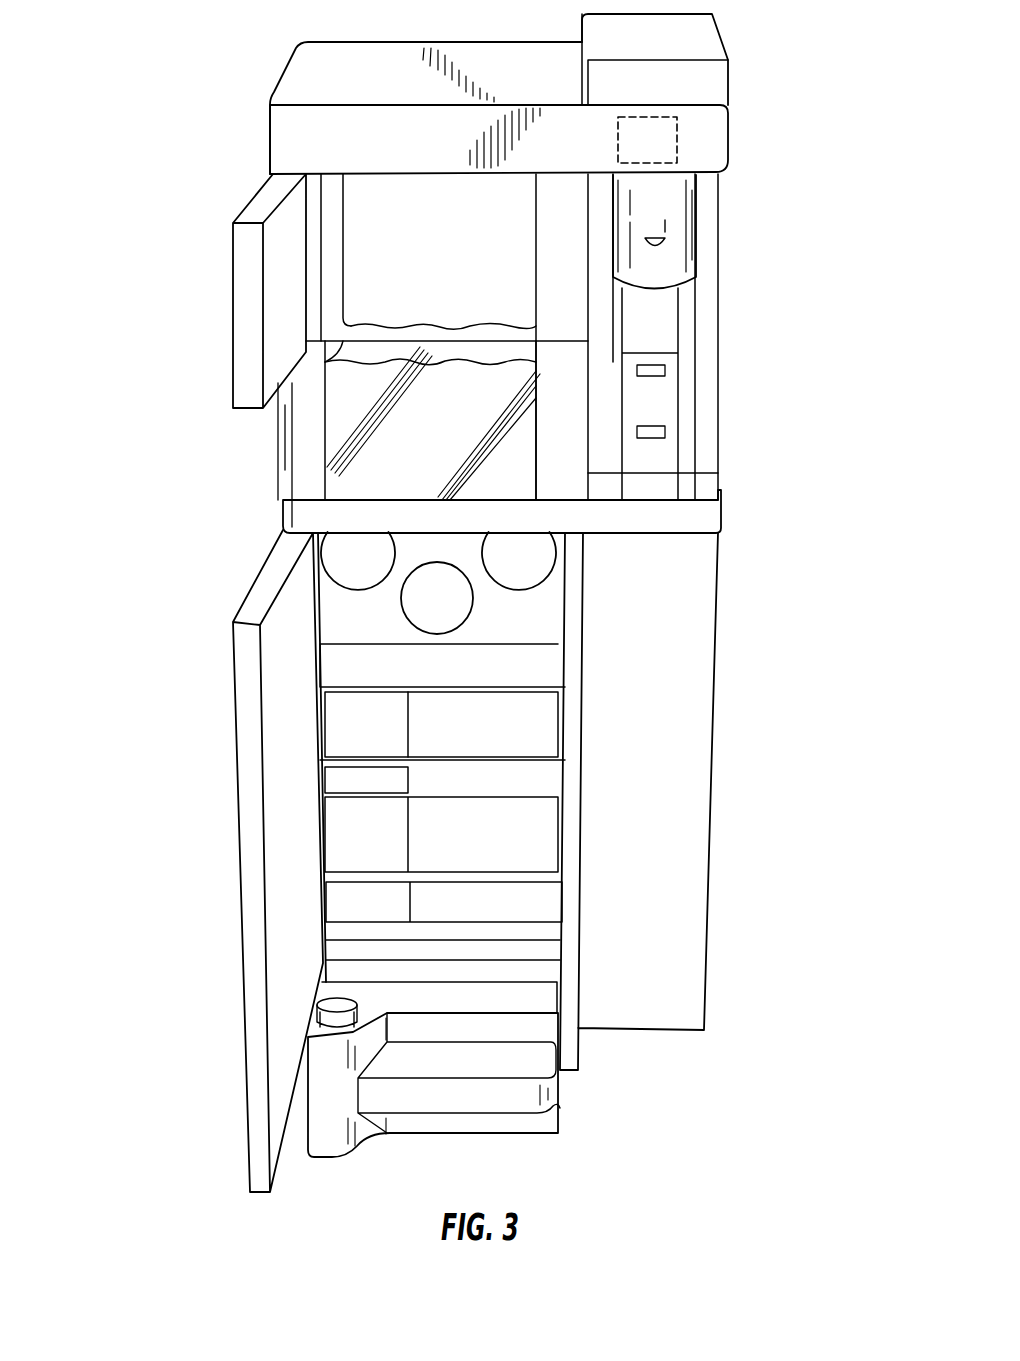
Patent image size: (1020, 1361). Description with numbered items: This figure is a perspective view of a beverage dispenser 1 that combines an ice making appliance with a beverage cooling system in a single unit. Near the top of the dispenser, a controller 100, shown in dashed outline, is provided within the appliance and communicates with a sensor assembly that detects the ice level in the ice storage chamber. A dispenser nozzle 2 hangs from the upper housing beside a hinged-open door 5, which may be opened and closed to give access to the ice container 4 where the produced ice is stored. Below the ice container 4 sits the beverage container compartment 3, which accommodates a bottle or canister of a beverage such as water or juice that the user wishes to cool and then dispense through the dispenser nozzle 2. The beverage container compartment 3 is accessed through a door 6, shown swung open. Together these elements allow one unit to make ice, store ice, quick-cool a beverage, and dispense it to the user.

The beverage dispenser 1 is at (178, 110).
The controller 100 is at (677, 147).
The dispenser nozzle 2 is at (667, 275).
The beverage container compartment 3 is at (367, 717).
The ice container 4 is at (368, 413).
The door 5 is at (245, 313).
The door 6 is at (263, 905).